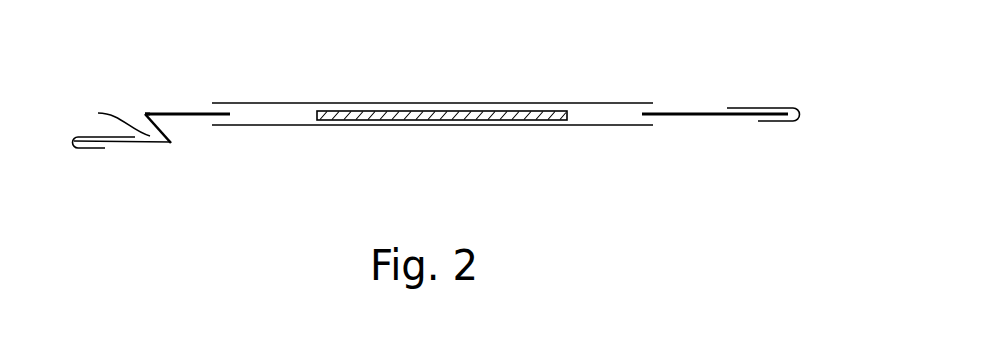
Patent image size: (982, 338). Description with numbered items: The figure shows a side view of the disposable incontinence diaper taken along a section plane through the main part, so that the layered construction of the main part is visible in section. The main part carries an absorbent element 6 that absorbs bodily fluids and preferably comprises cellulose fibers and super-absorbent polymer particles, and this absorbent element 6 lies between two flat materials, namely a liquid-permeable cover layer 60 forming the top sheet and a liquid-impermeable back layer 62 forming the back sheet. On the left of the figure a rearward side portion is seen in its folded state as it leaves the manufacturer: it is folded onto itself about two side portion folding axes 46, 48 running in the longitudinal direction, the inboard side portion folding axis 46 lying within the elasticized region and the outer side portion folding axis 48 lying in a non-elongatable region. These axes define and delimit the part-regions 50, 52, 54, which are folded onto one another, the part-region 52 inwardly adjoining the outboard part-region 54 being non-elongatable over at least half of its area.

The absorbent element 6 is at (437, 120).
The inboard side portion folding axis 46 is at (145, 110).
The outer side portion folding axis 48 is at (171, 143).
The part-region 50 is at (170, 113).
The part-region 52 is at (110, 118).
The outboard part-region 54 is at (95, 148).
The liquid-permeable cover layer 60 is at (302, 102).
The liquid-impermeable back layer 62 is at (280, 127).